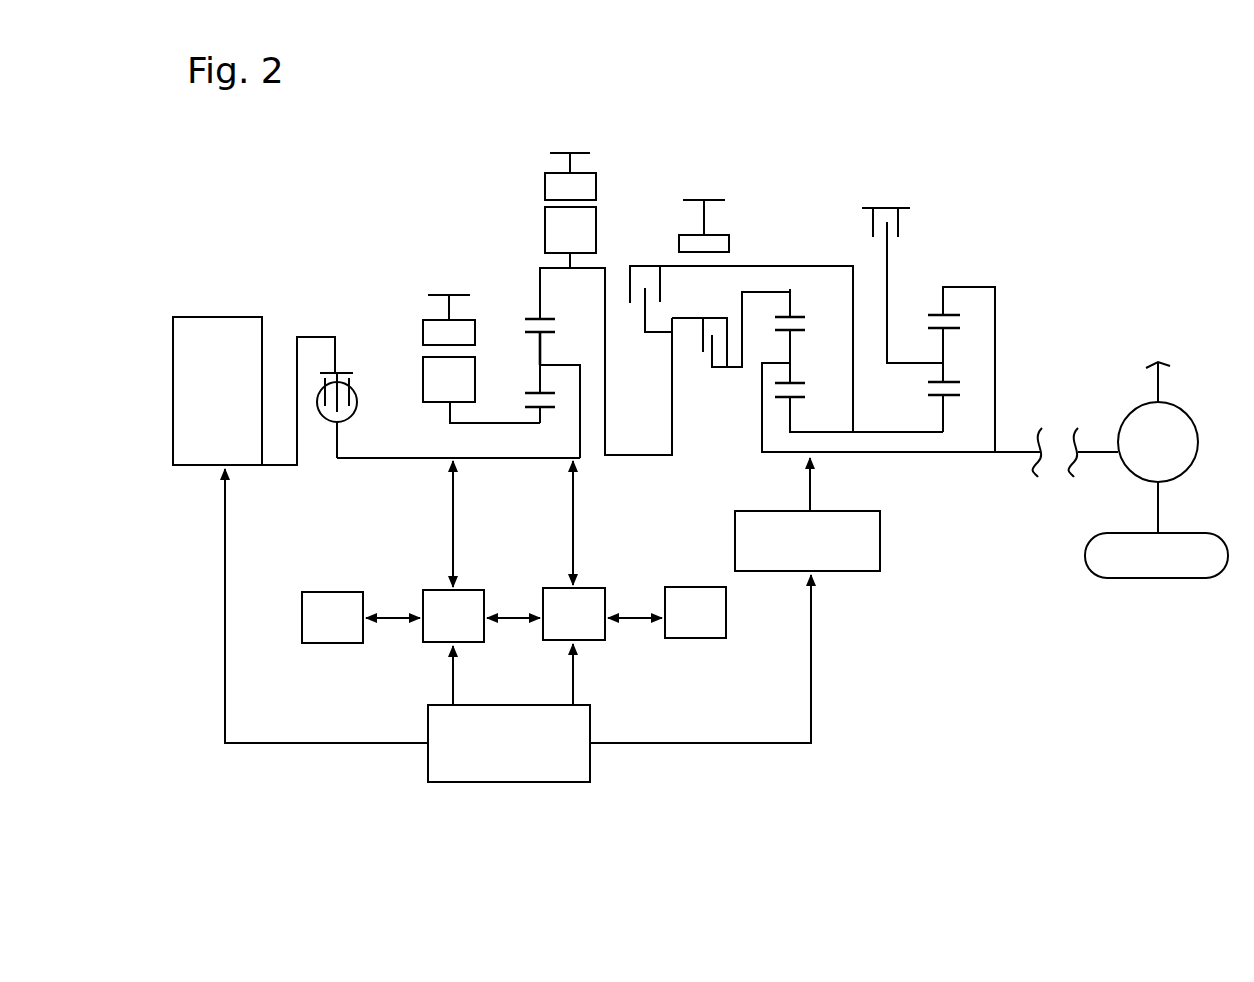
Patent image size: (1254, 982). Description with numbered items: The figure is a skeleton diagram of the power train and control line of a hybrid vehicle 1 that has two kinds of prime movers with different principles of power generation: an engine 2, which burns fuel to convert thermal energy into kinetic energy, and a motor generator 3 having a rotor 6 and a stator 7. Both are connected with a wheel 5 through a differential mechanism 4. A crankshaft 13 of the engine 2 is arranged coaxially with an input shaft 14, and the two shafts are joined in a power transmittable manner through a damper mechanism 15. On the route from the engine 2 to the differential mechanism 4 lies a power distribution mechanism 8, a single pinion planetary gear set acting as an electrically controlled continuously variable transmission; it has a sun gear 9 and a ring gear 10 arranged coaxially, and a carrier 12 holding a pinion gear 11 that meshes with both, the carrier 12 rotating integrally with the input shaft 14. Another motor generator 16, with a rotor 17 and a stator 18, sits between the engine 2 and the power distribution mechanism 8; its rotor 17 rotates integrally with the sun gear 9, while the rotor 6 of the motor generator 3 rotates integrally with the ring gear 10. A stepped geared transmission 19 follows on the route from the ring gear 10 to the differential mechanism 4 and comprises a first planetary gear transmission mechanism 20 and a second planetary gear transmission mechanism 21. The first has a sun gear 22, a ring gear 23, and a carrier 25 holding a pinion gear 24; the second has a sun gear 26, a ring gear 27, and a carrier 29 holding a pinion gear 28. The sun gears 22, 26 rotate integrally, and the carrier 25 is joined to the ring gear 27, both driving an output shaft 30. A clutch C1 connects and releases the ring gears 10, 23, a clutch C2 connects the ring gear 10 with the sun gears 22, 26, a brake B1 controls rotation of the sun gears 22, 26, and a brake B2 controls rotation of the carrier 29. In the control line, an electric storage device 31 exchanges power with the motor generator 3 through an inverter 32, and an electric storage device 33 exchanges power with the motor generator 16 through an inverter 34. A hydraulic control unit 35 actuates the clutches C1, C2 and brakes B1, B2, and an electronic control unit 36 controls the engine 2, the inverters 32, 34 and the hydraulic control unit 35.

The vehicle 1 is at (322, 244).
The engine 2 is at (212, 316).
The motor generator 3 is at (596, 166).
The differential mechanism 4 is at (1190, 421).
The wheel 5 is at (1152, 580).
The rotor 6 is at (545, 231).
The stator 7 is at (545, 186).
The power distribution mechanism 8 is at (531, 289).
The sun gear 9 is at (525, 396).
The ring gear 10 is at (556, 322).
The pinion gear 11 is at (530, 319).
The carrier 12 is at (566, 365).
The crankshaft 13 is at (278, 468).
The input shaft 14 is at (394, 462).
The damper mechanism 15 is at (341, 370).
The motor generator 16 is at (431, 292).
The rotor 17 is at (423, 385).
The stator 18 is at (423, 332).
The transmission 19 is at (925, 245).
The first planetary gear transmission mechanism 20 is at (780, 456).
The second planetary gear transmission mechanism 21 is at (950, 456).
The sun gear 22 is at (805, 397).
The ring gear 23 is at (800, 317).
The pinion gear 24 is at (805, 330).
The carrier 25 is at (761, 386).
The sun gear 26 is at (960, 395).
The ring gear 27 is at (928, 320).
The pinion gear 28 is at (960, 328).
The carrier 29 is at (906, 364).
The output shaft 30 is at (1020, 442).
The electric storage device 31 is at (694, 587).
The inverter 32 is at (606, 640).
The electric storage device 33 is at (330, 645).
The inverter 34 is at (430, 644).
The hydraulic control unit 35 is at (880, 540).
The electronic control unit 36 is at (506, 784).
The brake B1 is at (704, 215).
The brake B2 is at (886, 210).
The clutch C1 is at (731, 328).
The clutch C2 is at (741, 349).